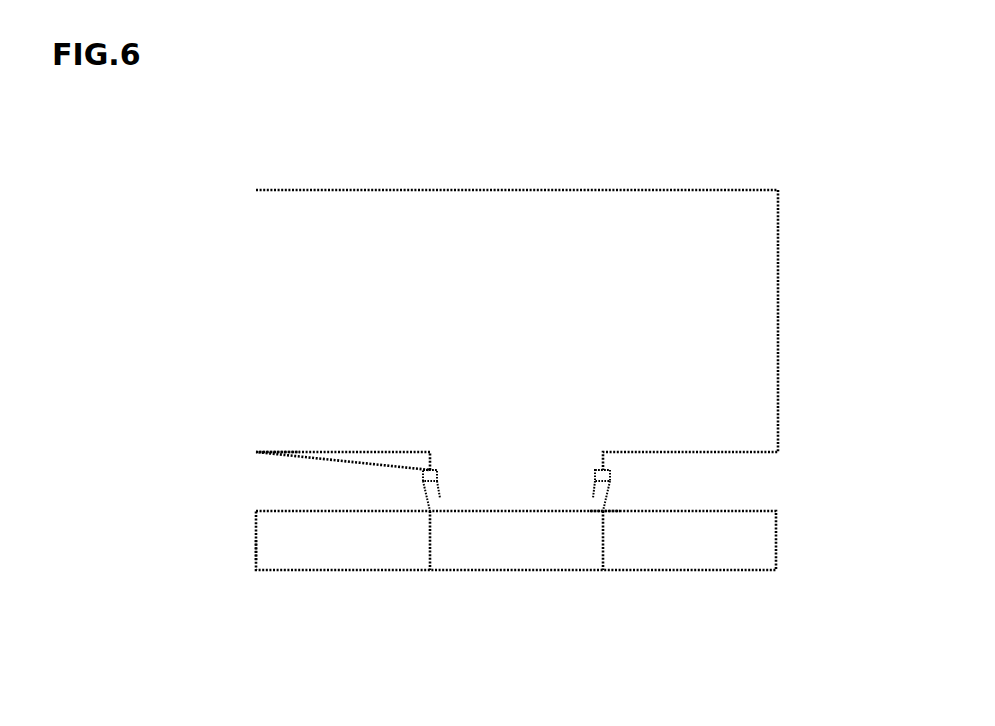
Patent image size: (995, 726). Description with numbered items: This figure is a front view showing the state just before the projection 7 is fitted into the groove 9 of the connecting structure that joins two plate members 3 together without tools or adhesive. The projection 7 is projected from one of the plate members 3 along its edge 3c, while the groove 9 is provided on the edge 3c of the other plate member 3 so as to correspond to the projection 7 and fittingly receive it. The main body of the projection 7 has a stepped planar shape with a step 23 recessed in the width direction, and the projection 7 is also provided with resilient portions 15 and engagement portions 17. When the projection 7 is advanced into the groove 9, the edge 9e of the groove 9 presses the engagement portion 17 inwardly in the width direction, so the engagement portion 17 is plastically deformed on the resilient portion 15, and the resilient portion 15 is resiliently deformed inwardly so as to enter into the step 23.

The plate member 3 is at (560, 186).
The edge 3c is at (272, 452).
The projection 7 is at (535, 512).
The groove 9 is at (461, 558).
The edge of the groove 9e is at (603, 511).
The resilient portion 15 is at (424, 478).
The engagement portion 17 is at (428, 500).
The step 23 is at (436, 474).